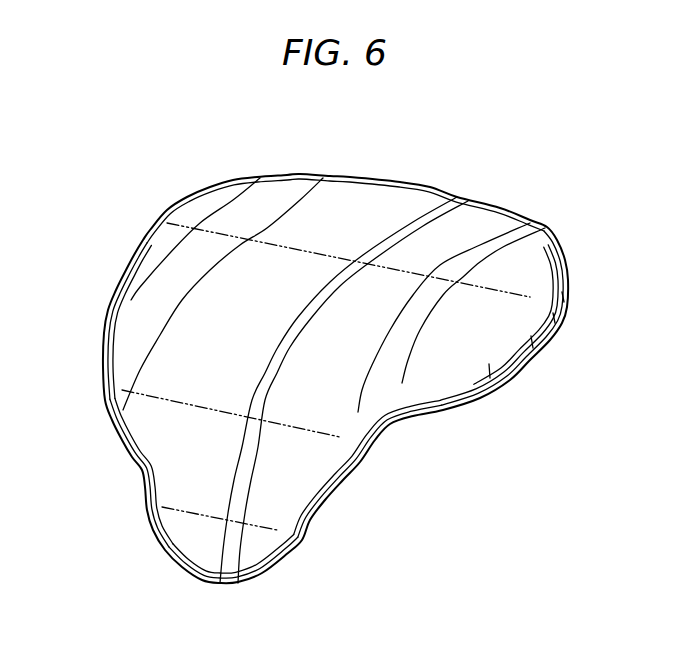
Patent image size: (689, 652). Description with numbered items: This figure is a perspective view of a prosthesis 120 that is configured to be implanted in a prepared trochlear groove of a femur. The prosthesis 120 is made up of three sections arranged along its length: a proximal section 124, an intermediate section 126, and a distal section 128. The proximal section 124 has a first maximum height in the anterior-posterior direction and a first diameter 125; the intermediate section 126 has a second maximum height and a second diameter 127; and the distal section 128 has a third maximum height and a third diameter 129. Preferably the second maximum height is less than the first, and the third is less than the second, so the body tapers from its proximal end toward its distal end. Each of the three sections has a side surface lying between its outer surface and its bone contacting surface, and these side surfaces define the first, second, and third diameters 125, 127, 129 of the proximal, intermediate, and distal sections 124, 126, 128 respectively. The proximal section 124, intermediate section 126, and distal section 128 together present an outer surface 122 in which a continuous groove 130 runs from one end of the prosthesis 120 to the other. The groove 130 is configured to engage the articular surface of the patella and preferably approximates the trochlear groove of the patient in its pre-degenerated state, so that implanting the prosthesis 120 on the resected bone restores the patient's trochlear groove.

The prosthesis 120 is at (616, 262).
The outer surface 122 is at (362, 213).
The proximal section 124 is at (538, 340).
The first diameter 125 is at (192, 228).
The intermediate section 126 is at (364, 463).
The second diameter 127 is at (150, 395).
The distal section 128 is at (297, 548).
The third diameter 129 is at (178, 513).
The continuous groove 130 is at (460, 198).